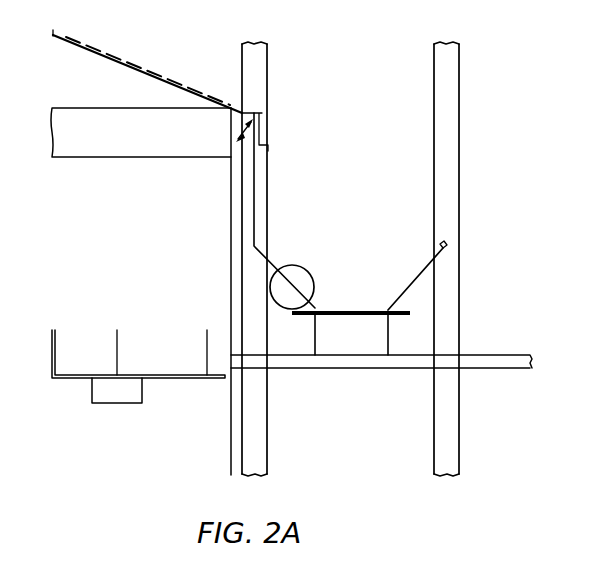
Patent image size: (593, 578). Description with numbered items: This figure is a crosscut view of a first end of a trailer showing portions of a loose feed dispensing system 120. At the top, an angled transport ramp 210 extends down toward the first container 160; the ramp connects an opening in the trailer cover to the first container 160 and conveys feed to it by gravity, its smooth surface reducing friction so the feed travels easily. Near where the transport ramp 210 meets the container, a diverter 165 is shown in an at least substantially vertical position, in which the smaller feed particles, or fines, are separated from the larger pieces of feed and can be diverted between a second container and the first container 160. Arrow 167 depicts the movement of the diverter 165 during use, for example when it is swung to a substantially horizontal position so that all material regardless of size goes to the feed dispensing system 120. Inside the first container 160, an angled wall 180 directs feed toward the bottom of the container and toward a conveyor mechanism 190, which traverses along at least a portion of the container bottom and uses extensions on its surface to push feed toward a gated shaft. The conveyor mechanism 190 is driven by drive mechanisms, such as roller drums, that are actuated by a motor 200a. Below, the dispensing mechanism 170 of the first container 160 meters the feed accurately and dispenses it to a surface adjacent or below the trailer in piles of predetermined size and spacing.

The loose feed dispensing system 120 is at (490, 75).
The first container 160 is at (366, 198).
The diverter 165 is at (260, 143).
The arrow 167 is at (243, 130).
The dispensing mechanism 170 is at (360, 369).
The wall 180 is at (447, 240).
The conveyor mechanism 190 is at (348, 311).
The motor 200a is at (283, 288).
The transport ramp 210 is at (157, 72).